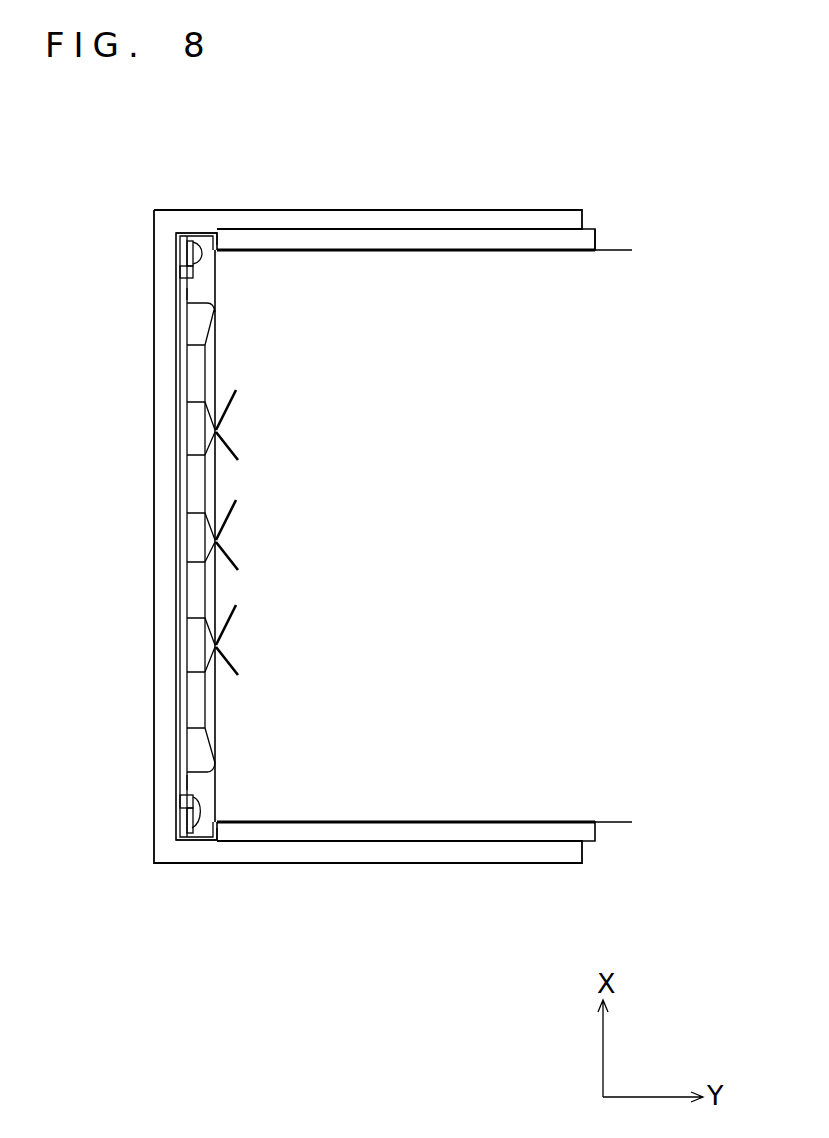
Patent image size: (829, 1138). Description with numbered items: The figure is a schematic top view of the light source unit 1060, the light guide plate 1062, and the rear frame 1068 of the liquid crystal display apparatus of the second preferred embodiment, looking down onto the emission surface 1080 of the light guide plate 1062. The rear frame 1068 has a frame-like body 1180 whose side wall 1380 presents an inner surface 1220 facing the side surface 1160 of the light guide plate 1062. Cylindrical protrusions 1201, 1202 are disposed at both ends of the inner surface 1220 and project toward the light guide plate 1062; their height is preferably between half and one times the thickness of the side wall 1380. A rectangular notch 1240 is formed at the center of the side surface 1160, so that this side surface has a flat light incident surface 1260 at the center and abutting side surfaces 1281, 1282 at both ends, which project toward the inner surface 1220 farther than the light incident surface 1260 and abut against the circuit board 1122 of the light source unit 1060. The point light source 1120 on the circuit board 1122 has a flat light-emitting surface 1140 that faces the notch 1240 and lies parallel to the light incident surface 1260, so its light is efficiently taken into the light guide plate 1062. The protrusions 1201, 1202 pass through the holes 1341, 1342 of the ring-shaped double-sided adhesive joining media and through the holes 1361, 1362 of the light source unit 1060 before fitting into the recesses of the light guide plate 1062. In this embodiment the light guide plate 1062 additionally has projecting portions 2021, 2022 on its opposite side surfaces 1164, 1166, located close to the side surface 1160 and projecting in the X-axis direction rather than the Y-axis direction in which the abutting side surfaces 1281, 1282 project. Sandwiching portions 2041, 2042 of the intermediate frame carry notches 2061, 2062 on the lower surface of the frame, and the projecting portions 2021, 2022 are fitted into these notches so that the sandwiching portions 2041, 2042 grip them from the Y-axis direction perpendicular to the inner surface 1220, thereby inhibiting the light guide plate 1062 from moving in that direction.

The side wall 1380 is at (157, 363).
The frame-like body 1180 is at (462, 208).
The rear frame 1068 is at (543, 208).
The side surface 1164 is at (601, 248).
The light guide plate 1062 is at (628, 249).
The side surface 1166 is at (608, 824).
The side surface 1160 is at (214, 386).
The light-emitting surface 1140 is at (212, 485).
The light incident surface 1260 is at (200, 502).
The notch 1240 is at (212, 610).
The inner surface 1220 is at (181, 700).
The point light source 1120 is at (193, 453).
The circuit board 1122 is at (193, 562).
The light source unit 1060 is at (190, 657).
The protrusion 1201 is at (222, 298).
The protrusion 1202 is at (199, 795).
The hole 1341 is at (187, 243).
The hole 1361 is at (180, 272).
The sandwiching portion 2041 is at (208, 257).
The abutting side surface 1281 is at (185, 291).
The projecting portion 2021 is at (193, 233).
The notch 2061 is at (205, 233).
The hole 1362 is at (180, 800).
The hole 1342 is at (188, 823).
The sandwiching portion 2042 is at (207, 812).
The abutting side surface 1282 is at (185, 782).
The projecting portion 2022 is at (190, 840).
The notch 2062 is at (207, 842).
The emission surface 1080 is at (447, 552).